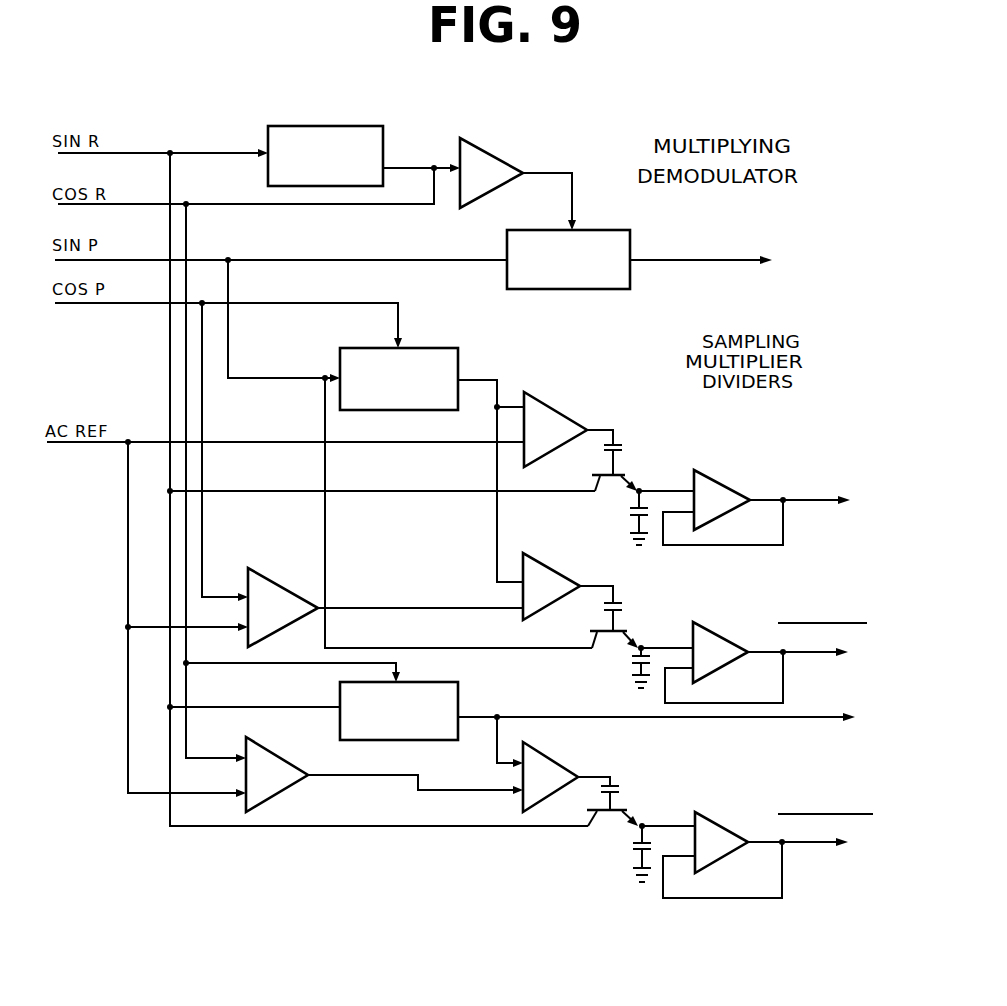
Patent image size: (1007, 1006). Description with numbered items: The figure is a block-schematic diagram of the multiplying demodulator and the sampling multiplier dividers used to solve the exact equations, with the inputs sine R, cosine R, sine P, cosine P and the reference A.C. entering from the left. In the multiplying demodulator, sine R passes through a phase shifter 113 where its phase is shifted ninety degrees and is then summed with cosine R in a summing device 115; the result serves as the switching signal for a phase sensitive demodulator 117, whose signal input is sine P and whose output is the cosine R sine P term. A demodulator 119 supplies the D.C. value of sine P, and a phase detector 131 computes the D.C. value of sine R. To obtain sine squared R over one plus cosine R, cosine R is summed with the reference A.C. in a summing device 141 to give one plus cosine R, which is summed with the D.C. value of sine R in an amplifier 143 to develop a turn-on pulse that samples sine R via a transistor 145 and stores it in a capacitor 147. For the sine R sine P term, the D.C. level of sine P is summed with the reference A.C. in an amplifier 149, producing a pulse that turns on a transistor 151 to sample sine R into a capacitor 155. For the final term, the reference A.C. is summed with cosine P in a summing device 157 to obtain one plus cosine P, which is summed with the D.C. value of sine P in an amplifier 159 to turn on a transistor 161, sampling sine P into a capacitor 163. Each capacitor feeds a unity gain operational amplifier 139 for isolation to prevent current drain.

The phase shifter 113 is at (305, 126).
The summing device 115 is at (493, 150).
The phase sensitive demodulator 117 is at (618, 292).
The demodulator 119 is at (420, 348).
The phase detector 131 is at (460, 690).
The operational amplifier 139 is at (768, 470).
The summing device 141 is at (268, 800).
The amplifier 143 is at (555, 760).
The transistor 145 is at (622, 800).
The capacitor 147 is at (630, 850).
The amplifier 149 is at (573, 418).
The transistor 151 is at (620, 472).
The capacitor 155 is at (630, 504).
The summing device 157 is at (305, 566).
The amplifier 159 is at (553, 567).
The transistor 161 is at (630, 634).
The capacitor 163 is at (630, 664).